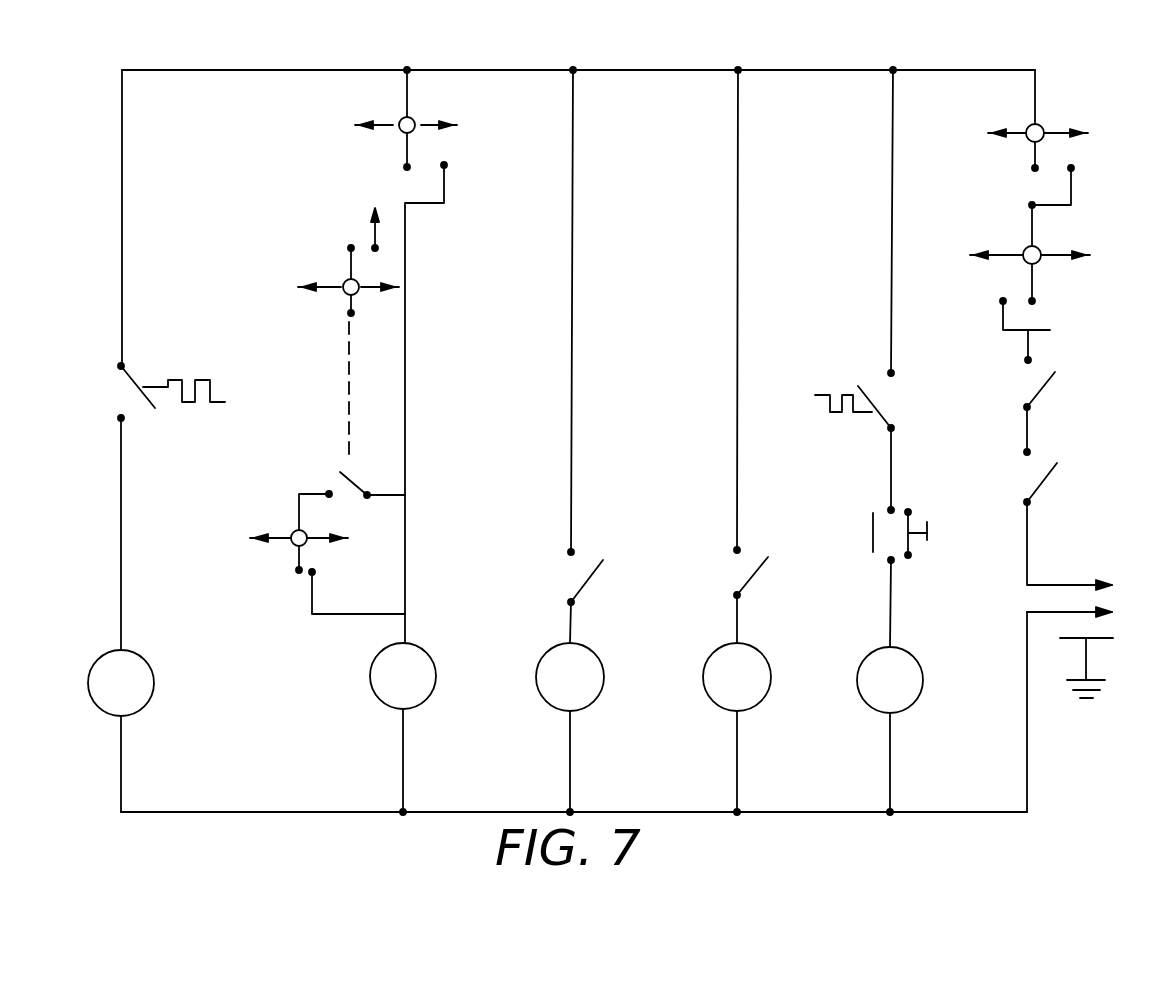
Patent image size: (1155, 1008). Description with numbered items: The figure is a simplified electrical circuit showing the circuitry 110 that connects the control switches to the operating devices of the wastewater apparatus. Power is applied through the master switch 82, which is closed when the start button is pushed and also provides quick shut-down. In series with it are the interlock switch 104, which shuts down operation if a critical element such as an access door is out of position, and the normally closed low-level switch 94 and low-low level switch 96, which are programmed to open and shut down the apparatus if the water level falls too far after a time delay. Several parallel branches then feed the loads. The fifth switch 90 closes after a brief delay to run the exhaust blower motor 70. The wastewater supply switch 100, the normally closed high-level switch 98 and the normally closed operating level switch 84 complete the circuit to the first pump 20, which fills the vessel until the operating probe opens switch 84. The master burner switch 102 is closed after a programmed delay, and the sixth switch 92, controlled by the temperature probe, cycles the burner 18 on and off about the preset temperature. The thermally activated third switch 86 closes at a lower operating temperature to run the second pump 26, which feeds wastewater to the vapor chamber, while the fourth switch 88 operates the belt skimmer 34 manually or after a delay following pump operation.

The circuitry 110 is at (452, 70).
The high-level switch 98 is at (400, 134).
The wastewater supply switch 100 is at (345, 316).
The third switch 86 is at (190, 402).
The second switch 84 is at (296, 562).
The second pump 26 is at (137, 699).
The first pump 20 is at (419, 692).
The exhaust blower motor 70 is at (586, 693).
The belt skimmer 34 is at (753, 693).
The burner 18 is at (904, 696).
The fifth switch 90 is at (594, 572).
The fourth switch 88 is at (758, 570).
The sixth switch 92 is at (868, 414).
The master burner switch 102 is at (862, 548).
The low-low level switch 96 is at (1050, 128).
The low-level probe switch 94 is at (1040, 248).
The interlock switch 104 is at (1044, 386).
The first switch 82 is at (1046, 478).